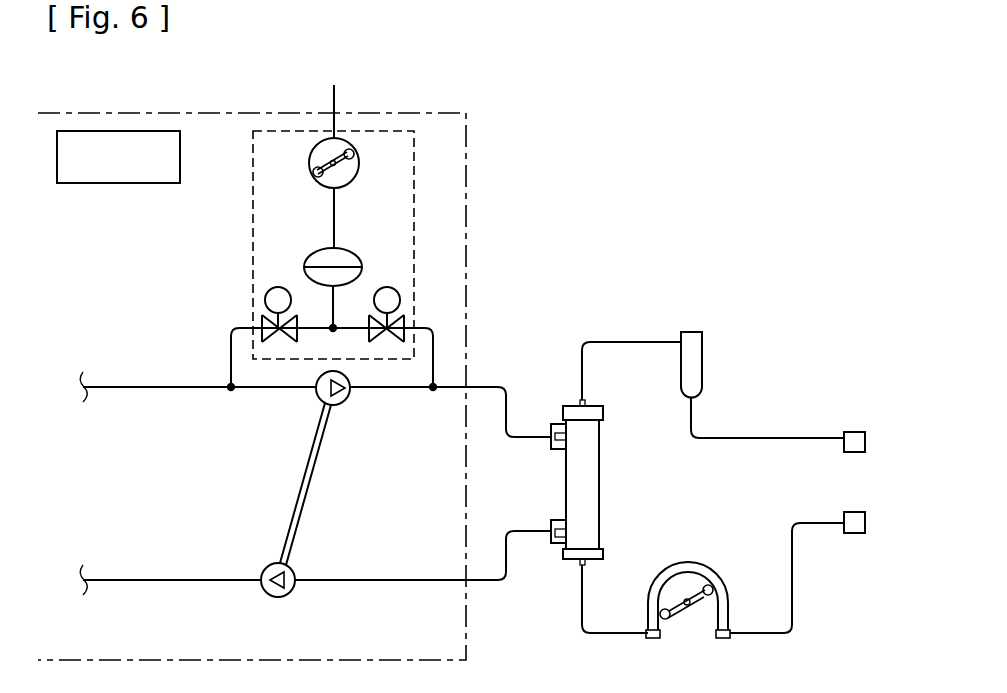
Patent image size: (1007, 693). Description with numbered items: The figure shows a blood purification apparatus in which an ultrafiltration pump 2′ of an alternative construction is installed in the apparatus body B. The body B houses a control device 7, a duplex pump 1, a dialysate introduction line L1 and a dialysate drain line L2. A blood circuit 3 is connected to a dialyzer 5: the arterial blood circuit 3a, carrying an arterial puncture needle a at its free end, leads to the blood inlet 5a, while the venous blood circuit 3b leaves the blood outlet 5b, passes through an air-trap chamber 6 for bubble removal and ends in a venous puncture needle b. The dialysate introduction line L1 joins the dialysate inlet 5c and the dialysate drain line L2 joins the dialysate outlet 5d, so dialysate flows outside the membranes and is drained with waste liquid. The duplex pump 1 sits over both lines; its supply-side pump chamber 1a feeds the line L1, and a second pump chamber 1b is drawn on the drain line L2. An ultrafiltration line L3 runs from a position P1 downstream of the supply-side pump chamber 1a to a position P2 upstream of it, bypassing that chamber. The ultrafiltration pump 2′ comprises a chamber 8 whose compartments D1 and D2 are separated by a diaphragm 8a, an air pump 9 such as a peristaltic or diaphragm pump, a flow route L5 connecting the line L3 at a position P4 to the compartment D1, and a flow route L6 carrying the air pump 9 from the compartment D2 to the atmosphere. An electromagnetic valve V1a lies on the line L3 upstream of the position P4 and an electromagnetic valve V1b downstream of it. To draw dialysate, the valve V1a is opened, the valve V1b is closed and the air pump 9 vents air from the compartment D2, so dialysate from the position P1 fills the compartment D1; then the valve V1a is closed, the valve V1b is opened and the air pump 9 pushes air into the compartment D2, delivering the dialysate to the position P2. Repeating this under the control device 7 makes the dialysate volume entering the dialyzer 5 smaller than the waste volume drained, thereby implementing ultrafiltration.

The control device 7 is at (160, 131).
The flow route L6 is at (332, 103).
The air pump 9 is at (309, 163).
The ultrafiltration pump 2′ is at (414, 177).
The apparatus body B is at (466, 210).
The chamber 8 is at (346, 252).
The diaphragm 8a is at (364, 262).
The compartment D2 is at (316, 258).
The compartment D1 is at (316, 273).
The electromagnetic valve V1b is at (265, 300).
The electromagnetic valve V1a is at (402, 300).
The ultrafiltration line L3 is at (434, 355).
The flow route L5 is at (330, 312).
The position P4 is at (336, 332).
The dialysate introduction line L1 is at (167, 395).
The position P2 is at (233, 395).
The position P1 is at (433, 395).
The duplex pump 1 is at (294, 495).
The supply-side pump chamber 1a is at (345, 400).
The pump 1b is at (268, 567).
The dialysate drain line L2 is at (162, 575).
The dialyzer 5 is at (629, 491).
The blood inlet 5a is at (586, 565).
The blood outlet 5b is at (588, 402).
The dialysate inlet 5c is at (553, 428).
The dialysate outlet 5d is at (555, 550).
The air-trap chamber 6 is at (704, 361).
The venous blood circuit 3b is at (783, 438).
The venous puncture needle b is at (858, 432).
The blood circuit 3 is at (808, 613).
The arterial blood circuit 3a is at (784, 636).
The arterial puncture needle a is at (856, 535).